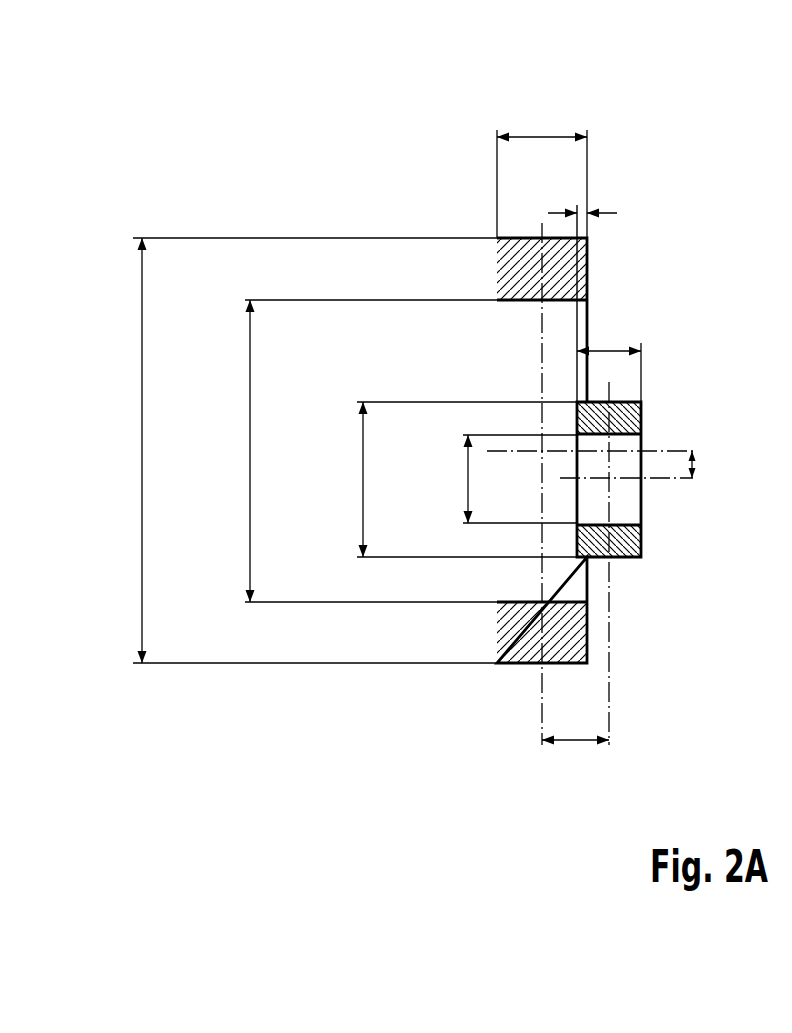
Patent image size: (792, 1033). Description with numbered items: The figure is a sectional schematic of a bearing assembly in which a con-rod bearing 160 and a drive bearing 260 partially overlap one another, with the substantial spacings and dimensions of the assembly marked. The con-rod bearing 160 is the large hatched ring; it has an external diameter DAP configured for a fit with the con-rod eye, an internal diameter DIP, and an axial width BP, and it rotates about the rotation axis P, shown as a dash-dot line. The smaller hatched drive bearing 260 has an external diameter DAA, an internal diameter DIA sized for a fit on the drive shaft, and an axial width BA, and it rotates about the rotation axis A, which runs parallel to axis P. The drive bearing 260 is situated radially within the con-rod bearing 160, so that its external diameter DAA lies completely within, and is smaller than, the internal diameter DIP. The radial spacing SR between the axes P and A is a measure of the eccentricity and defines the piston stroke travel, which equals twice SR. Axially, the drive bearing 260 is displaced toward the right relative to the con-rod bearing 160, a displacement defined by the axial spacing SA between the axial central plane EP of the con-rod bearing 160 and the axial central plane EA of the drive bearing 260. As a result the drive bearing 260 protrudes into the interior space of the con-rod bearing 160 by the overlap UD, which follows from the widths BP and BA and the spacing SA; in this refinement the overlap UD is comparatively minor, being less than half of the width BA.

The con-rod bearing 160 is at (575, 635).
The drive bearing 260 is at (632, 540).
The external diameter of the con-rod bearing DAP is at (141, 482).
The internal diameter of the con-rod bearing DIP is at (249, 482).
The external diameter of the drive bearing DAA is at (362, 482).
The internal diameter of the drive bearing DIA is at (467, 482).
The width of the con-rod bearing BP is at (542, 132).
The overlap UD is at (580, 212).
The width of the drive bearing BA is at (608, 350).
The rotation axis of the con-rod bearing P is at (677, 451).
The rotation axis of the drive bearing A is at (677, 478).
The radial spacing SR is at (697, 462).
The axial central plane of the con-rod bearing EP is at (542, 710).
The axial central plane of the drive bearing EA is at (609, 710).
The axial spacing SA is at (572, 743).